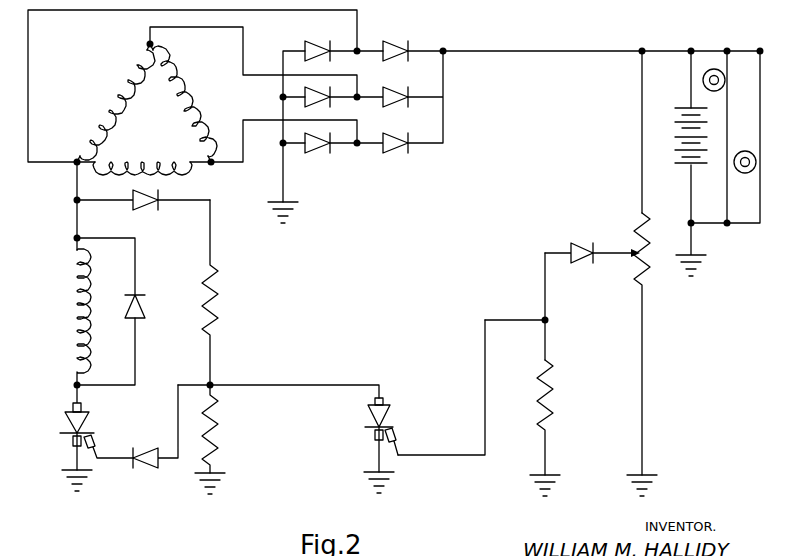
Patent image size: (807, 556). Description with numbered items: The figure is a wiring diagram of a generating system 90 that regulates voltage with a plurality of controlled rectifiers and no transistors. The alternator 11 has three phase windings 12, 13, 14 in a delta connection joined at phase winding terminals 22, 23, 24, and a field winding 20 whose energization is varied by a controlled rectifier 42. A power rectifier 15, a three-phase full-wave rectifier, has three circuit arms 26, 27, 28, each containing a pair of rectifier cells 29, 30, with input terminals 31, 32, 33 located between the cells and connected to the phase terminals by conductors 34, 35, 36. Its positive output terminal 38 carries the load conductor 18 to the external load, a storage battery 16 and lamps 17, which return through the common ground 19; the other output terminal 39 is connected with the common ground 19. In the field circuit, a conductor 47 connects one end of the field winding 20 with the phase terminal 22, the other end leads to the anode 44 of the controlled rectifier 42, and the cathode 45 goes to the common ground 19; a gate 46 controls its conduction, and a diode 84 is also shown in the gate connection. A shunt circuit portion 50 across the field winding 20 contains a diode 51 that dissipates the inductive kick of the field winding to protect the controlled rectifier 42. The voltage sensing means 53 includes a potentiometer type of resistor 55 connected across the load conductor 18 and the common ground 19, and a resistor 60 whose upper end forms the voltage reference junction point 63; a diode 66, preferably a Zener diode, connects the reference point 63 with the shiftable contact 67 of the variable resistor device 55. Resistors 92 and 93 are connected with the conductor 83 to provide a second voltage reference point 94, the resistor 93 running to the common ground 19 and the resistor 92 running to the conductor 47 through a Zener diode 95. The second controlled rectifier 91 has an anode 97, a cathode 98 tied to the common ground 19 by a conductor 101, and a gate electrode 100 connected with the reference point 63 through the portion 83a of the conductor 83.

The alternator 11 is at (148, 118).
The phase winding 12 is at (112, 90).
The phase winding 13 is at (182, 82).
The phase winding 14 is at (128, 172).
The power rectifier 15 is at (433, 84).
The storage battery 16 is at (685, 108).
The lamps 17 is at (742, 150).
The load conductor 18 is at (598, 50).
The common ground 19 is at (296, 204).
The field winding 20 is at (70, 296).
The phase winding terminal 22 is at (76, 160).
The phase winding terminal 23 is at (146, 44).
The phase winding terminal 24 is at (214, 159).
The circuit arm 26 is at (363, 54).
The circuit arm 27 is at (364, 101).
The circuit arm 28 is at (366, 147).
The rectifier cell 29 is at (316, 47).
The rectifier cell 30 is at (396, 46).
The input terminal 31 is at (359, 49).
The input terminal 32 is at (372, 91).
The input terminal 33 is at (360, 143).
The conductor 34 is at (247, 12).
The conductor 35 is at (244, 62).
The conductor 36 is at (244, 155).
The positive output terminal 38 is at (445, 48).
The output terminal 39 is at (286, 147).
The controlled rectifier 42 is at (93, 420).
The anode 44 is at (70, 405).
The cathode 45 is at (61, 438).
The gate 46 is at (96, 444).
The conductor 47 is at (74, 200).
The circuit portion 50 is at (138, 338).
The diode 51 is at (129, 306).
The voltage sensing means 53 is at (623, 236).
The potentiometer type of resistor 55 is at (648, 242).
The resistor 60 is at (562, 380).
The voltage reference junction point 63 is at (549, 320).
The diode 66 is at (583, 243).
The shiftable contact 67 is at (620, 258).
The conductor 83 is at (297, 385).
The conductor portion 83a is at (487, 380).
The diode 84 is at (148, 470).
The generating system 90 is at (516, 49).
The second controlled rectifier 91 is at (393, 420).
The resistor 92 is at (218, 300).
The resistor 93 is at (218, 440).
The second voltage reference point 94 is at (214, 384).
The diode 95 is at (162, 196).
The anode 97 is at (372, 402).
The cathode 98 is at (372, 431).
The gate electrode 100 is at (398, 436).
The conductor 101 is at (375, 468).